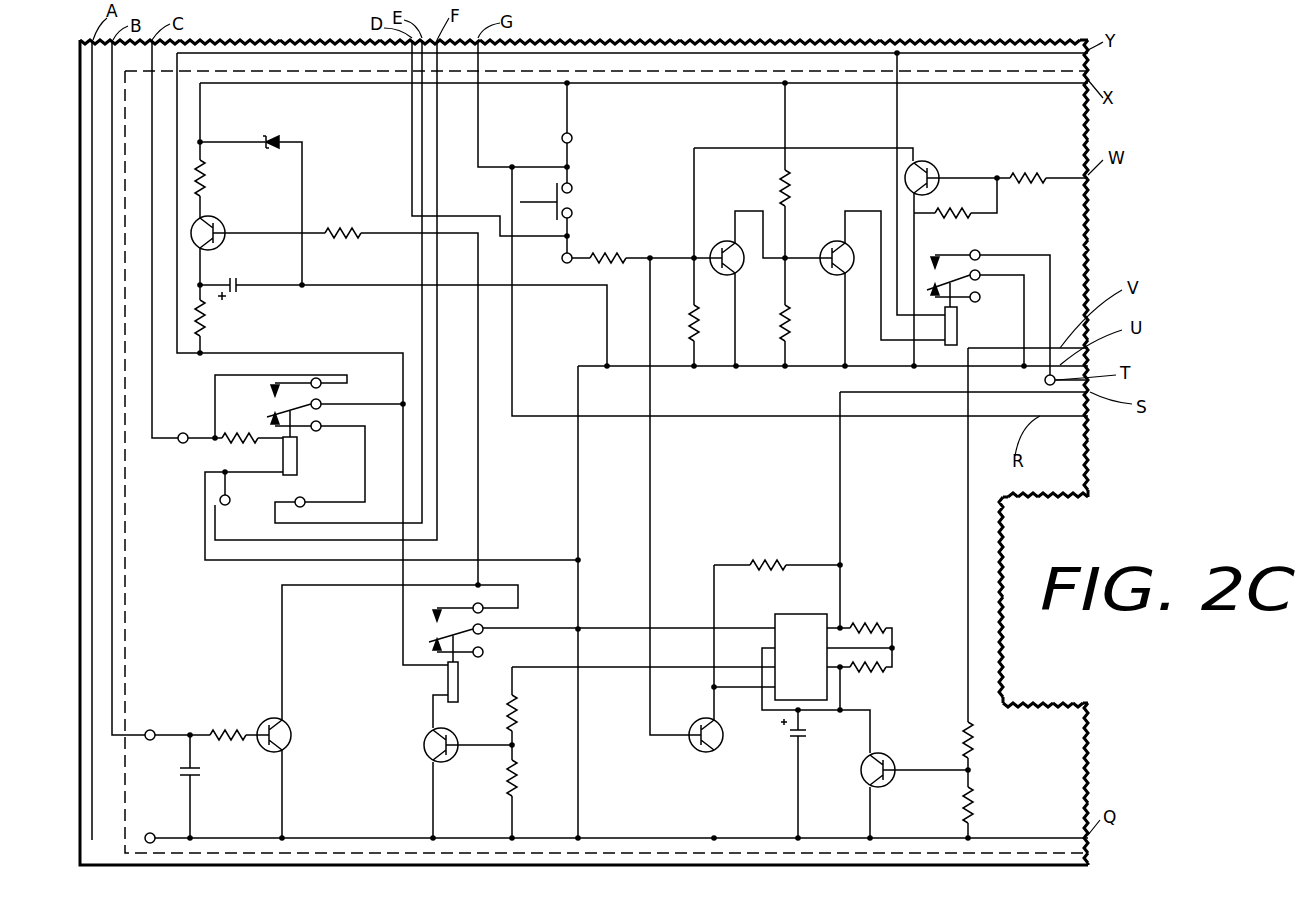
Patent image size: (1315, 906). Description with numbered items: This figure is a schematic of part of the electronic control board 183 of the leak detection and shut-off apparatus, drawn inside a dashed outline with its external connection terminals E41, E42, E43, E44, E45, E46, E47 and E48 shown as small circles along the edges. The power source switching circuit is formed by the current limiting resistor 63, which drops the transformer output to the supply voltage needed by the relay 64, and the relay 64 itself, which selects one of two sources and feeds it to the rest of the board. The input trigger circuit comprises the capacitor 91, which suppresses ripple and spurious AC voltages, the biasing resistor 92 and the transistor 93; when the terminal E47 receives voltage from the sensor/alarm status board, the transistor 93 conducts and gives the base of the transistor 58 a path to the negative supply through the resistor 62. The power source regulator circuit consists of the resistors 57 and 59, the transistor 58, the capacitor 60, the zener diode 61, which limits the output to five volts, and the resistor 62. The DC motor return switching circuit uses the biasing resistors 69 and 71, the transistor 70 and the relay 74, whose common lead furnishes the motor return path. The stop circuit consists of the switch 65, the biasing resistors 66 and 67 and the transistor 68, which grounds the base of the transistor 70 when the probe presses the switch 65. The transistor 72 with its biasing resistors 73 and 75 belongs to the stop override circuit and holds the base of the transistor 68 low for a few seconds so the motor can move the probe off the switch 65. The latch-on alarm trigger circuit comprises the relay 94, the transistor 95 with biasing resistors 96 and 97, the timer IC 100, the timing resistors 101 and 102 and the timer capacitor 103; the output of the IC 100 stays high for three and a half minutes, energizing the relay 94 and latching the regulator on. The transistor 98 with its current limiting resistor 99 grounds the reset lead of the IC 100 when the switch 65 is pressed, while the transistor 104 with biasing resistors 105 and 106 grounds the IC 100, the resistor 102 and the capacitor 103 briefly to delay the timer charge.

The resistor 57 is at (203, 178).
The transistor 58 is at (215, 218).
The resistor 59 is at (205, 318).
The capacitor 60 is at (238, 280).
The zener diode 61 is at (283, 142).
The resistor 62 is at (340, 226).
The resistor 63 is at (235, 447).
The relay 64 is at (297, 457).
The switch 65 is at (575, 213).
The resistor 66 is at (620, 256).
The resistor 67 is at (694, 325).
The transistor 68 is at (722, 240).
The resistor 69 is at (780, 185).
The transistor 70 is at (827, 240).
The resistor 71 is at (790, 340).
The transistor 72 is at (915, 160).
The resistor 73 is at (967, 210).
The relay 74 is at (957, 323).
The resistor 75 is at (1025, 175).
The capacitor 91 is at (200, 773).
The resistor 92 is at (228, 728).
The transistor 93 is at (272, 718).
The relay 94 is at (448, 685).
The transistor 95 is at (425, 735).
The resistor 96 is at (520, 718).
The resistor 97 is at (505, 790).
The transistor 98 is at (690, 725).
The resistor 99 is at (775, 560).
The integrated timer circuit 100 is at (775, 615).
The resistor 101 is at (875, 620).
The resistor 102 is at (875, 672).
The capacitor 103 is at (790, 735).
The transistor 104 is at (858, 760).
The resistor 105 is at (975, 740).
The resistor 106 is at (975, 805).
The electronic control board 183 is at (125, 605).
The terminal E41 is at (186, 426).
The terminal E42 is at (237, 513).
The terminal E43 is at (301, 493).
The terminal E44 is at (587, 139).
The terminal E45 is at (547, 259).
The terminal E46 is at (1029, 381).
The terminal E47 is at (151, 723).
The terminal E48 is at (144, 830).